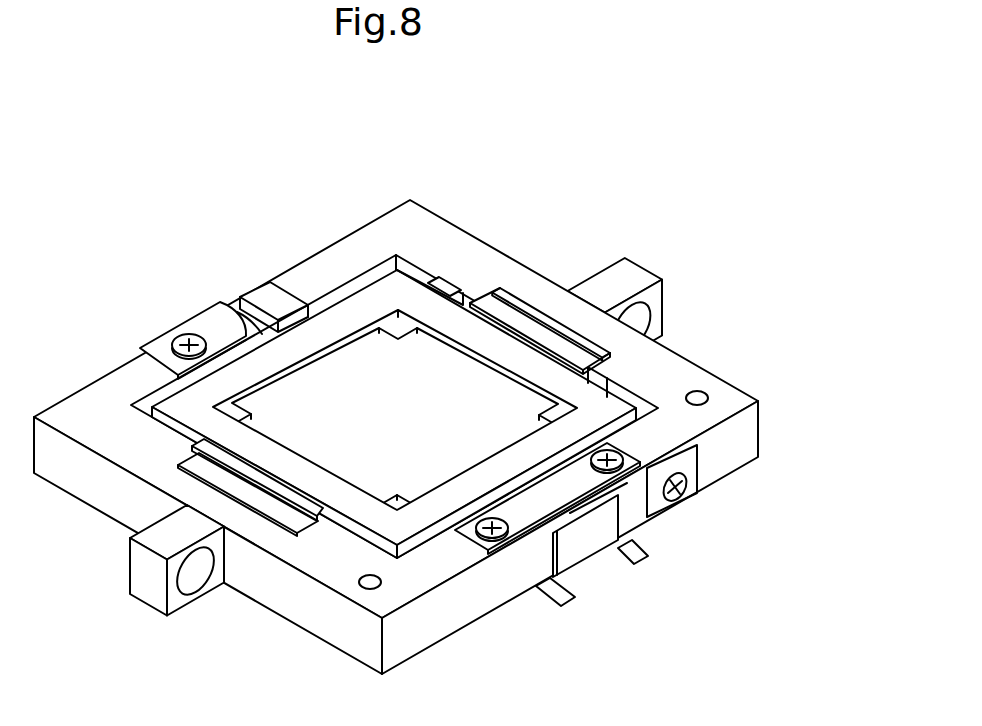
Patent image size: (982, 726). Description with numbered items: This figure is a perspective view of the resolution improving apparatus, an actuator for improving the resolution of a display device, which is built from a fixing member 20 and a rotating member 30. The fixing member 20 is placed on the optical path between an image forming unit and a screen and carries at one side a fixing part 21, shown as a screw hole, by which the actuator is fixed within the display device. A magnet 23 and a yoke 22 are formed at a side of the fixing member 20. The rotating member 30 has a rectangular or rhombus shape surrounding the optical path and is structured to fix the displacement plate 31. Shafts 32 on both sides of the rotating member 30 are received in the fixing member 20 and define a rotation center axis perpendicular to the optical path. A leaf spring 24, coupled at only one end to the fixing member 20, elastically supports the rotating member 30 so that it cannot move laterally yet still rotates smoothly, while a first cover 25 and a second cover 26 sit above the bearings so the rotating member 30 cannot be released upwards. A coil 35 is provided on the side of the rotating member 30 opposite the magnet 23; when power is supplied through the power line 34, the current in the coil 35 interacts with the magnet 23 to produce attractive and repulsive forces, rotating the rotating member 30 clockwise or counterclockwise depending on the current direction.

The fixing member 20 is at (772, 438).
The fixing part 21 is at (633, 275).
The yoke 22 is at (518, 303).
The magnet 23 is at (543, 337).
The leaf spring 24 is at (572, 553).
The first cover 25 is at (567, 492).
The second cover 26 is at (204, 327).
The rotating member 30 is at (370, 354).
The displacement plate 31 is at (372, 372).
The shaft 32 is at (655, 517).
The power line 34 is at (643, 550).
The coil 35 is at (447, 293).